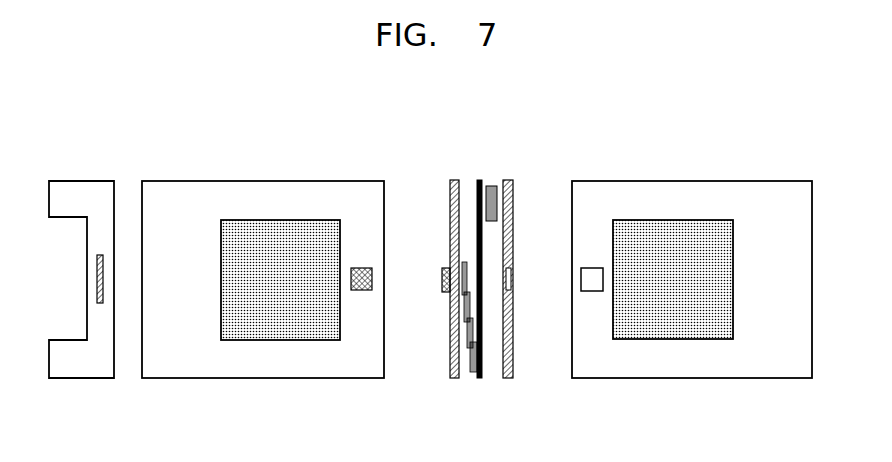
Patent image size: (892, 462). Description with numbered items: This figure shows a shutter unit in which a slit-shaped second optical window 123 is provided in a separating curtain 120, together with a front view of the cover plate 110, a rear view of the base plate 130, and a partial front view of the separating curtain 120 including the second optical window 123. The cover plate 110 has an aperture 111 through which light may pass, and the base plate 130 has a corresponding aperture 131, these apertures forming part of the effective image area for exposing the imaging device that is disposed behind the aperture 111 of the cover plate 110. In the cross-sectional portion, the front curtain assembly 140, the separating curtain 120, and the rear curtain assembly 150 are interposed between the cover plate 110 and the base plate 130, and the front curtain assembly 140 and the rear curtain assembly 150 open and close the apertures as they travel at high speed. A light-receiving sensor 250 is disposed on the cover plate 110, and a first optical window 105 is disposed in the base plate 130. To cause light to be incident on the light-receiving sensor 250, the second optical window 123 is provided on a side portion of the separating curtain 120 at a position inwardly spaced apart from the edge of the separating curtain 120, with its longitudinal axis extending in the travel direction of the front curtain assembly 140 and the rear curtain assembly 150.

The first optical window 105 is at (514, 285).
The cover plate 110 is at (232, 181).
The aperture 111 is at (268, 250).
The separating curtain 120 is at (478, 180).
The second optical window 123 is at (100, 255).
The base plate 130 is at (505, 380).
The aperture 131 is at (690, 250).
The front curtain assembly 140 is at (466, 378).
The rear curtain assembly 150 is at (498, 178).
The light-receiving sensor 250 is at (362, 268).